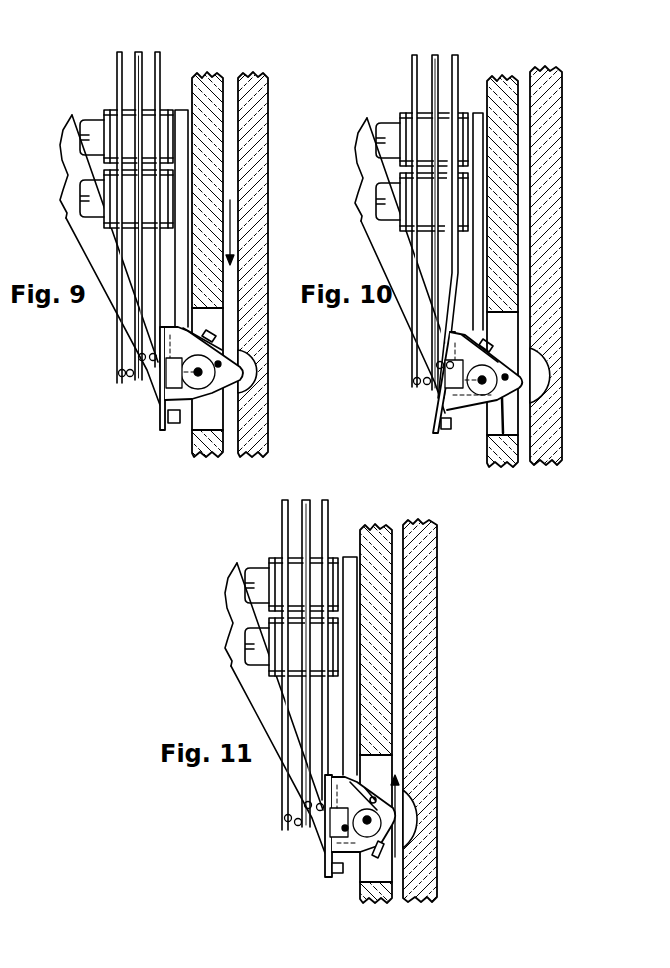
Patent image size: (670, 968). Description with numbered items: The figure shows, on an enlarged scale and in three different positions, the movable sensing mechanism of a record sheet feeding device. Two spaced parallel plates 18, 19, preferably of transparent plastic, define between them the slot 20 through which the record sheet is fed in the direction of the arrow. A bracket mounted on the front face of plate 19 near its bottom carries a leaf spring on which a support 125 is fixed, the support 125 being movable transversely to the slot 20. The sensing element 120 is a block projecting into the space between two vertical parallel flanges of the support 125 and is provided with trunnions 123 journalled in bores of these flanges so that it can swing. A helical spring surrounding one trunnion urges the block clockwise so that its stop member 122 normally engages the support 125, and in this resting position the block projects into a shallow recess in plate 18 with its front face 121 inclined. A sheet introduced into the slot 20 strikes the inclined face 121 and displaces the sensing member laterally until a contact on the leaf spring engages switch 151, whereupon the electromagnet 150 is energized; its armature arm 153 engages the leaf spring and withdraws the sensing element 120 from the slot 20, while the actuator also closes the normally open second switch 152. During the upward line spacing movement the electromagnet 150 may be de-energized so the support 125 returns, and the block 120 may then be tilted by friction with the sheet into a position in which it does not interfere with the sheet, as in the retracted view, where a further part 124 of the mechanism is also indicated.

In FIG. 9, the plate 18 is at (255, 125).
In FIG. 10, the plate 18 is at (583, 265).
In FIG. 11, the plate 18 is at (455, 710).
In FIG. 9, the plate 19 is at (207, 80).
In FIG. 10, the plate 19 is at (502, 242).
In FIG. 11, the plate 19 is at (376, 684).
In FIG. 9, the slot 20 is at (230, 178).
In FIG. 10, the slot 20 is at (580, 183).
In FIG. 11, the slot 20 is at (449, 743).
In FIG. 9, the electromagnet 150 is at (188, 110).
In FIG. 9, the sensing element 120 is at (230, 367).
In FIG. 10, the sensing element 120 is at (538, 372).
In FIG. 11, the sensing element 120 is at (418, 814).
In FIG. 9, the front face 121 is at (243, 360).
In FIG. 10, the front face 121 is at (546, 347).
In FIG. 9, the stop member 122 is at (182, 392).
In FIG. 10, the trunnions 123 is at (566, 373).
In FIG. 11, the trunnions 123 is at (424, 831).
In FIG. 10, the stop bolt 124 is at (503, 461).
In FIG. 11, the stop bolt 124 is at (439, 857).
In FIG. 9, the support 125 is at (200, 360).
In FIG. 11, the support 125 is at (427, 782).
In FIG. 9, the switch 151 is at (145, 360).
In FIG. 10, the switch 151 is at (390, 393).
In FIG. 11, the switch 151 is at (280, 845).
In FIG. 9, the second switch 152 is at (127, 383).
In FIG. 10, the second switch 152 is at (390, 391).
In FIG. 11, the second switch 152 is at (276, 841).
In FIG. 9, the arm 153 is at (172, 424).
In FIG. 10, the arm 153 is at (443, 451).
In FIG. 11, the arm 153 is at (318, 900).